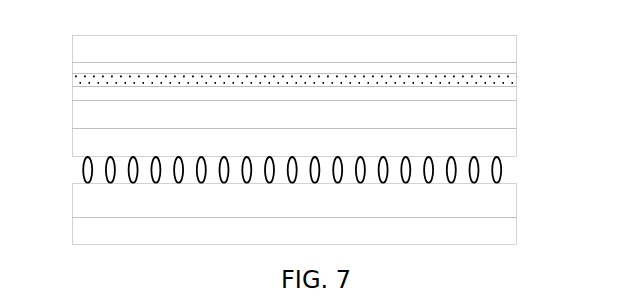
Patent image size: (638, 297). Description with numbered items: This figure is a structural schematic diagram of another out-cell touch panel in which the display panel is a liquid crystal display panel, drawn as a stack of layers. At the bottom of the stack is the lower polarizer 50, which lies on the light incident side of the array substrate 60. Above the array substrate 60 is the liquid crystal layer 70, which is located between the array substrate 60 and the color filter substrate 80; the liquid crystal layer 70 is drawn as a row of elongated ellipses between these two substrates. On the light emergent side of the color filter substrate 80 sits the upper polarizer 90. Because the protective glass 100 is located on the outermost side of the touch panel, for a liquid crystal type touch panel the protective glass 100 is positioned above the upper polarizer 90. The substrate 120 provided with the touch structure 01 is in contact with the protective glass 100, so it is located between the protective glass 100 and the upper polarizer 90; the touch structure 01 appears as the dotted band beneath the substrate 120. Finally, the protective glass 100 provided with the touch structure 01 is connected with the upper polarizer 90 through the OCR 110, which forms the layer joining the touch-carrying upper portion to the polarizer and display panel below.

The protective glass 100 is at (508, 44).
The substrate 120 is at (97, 68).
The touch structure 01 is at (507, 80).
The OCR 110 is at (97, 92).
The upper polarizer 90 is at (508, 118).
The color filter substrate 80 is at (500, 140).
The liquid crystal layer 70 is at (502, 168).
The array substrate 60 is at (503, 200).
The lower polarizer 50 is at (503, 228).